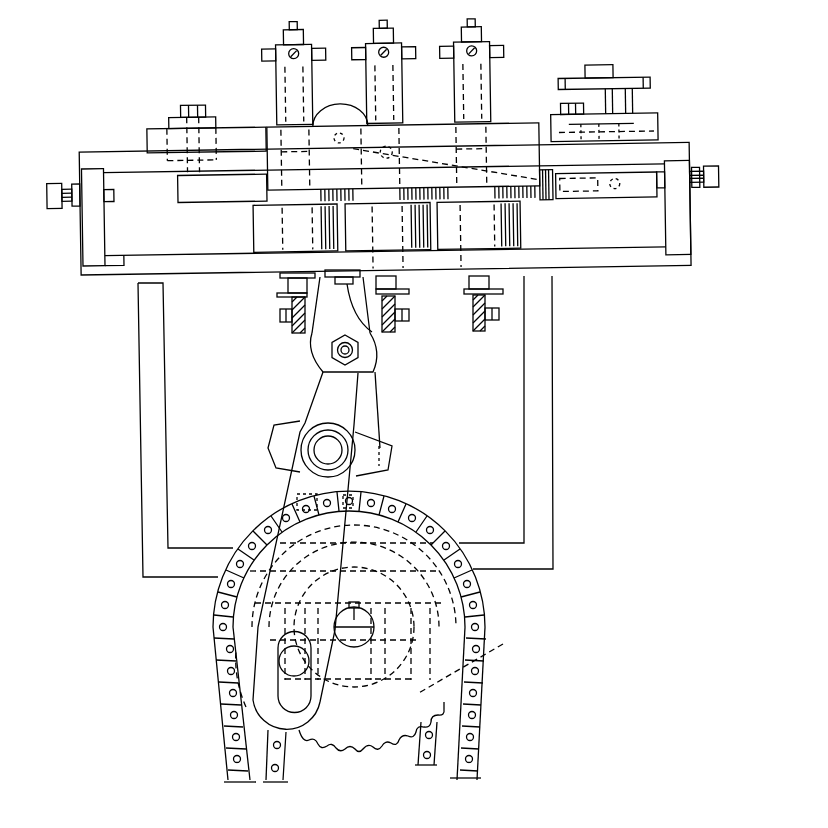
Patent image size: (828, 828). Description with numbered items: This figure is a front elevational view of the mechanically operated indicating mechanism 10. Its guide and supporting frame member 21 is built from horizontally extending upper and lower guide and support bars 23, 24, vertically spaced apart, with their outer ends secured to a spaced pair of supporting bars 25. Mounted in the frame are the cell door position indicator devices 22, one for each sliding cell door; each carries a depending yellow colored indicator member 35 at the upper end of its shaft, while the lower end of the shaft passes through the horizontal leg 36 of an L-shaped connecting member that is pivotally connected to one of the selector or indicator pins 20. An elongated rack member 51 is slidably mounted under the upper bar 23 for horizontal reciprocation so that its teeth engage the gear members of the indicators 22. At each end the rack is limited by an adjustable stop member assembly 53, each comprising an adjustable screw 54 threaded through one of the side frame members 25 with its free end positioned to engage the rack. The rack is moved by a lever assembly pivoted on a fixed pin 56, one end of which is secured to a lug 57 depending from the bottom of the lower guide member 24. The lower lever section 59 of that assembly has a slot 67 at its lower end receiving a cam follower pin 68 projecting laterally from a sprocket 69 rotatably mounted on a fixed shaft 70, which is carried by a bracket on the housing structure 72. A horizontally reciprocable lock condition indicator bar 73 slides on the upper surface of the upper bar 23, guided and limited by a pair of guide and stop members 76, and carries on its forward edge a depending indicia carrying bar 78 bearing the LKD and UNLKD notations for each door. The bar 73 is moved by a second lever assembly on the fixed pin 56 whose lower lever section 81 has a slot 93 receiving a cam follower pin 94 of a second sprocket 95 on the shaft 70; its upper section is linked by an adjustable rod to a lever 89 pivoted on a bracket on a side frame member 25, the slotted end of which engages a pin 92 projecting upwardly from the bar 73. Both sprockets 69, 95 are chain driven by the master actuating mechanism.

The mechanically operated indicating mechanism 10 is at (125, 419).
The selector or indicator pin 20 is at (478, 333).
The guide and supporting frame member 21 is at (130, 25).
The cell door position indicator device 22 is at (512, 43).
The upper guide and support bar 23 is at (147, 164).
The lower guide and support bar 24 is at (638, 259).
The supporting bar 25 is at (95, 228).
The yellow colored indicator member 35 is at (304, 62).
The horizontal leg 36 is at (278, 292).
The rack member 51 is at (649, 201).
The adjustable stop member assembly 53 is at (70, 160).
The adjustable screw 54 is at (717, 180).
The fixed pin 56 is at (369, 371).
The lug 57 is at (386, 340).
The lower lever section 59 is at (394, 460).
The slot 67 is at (276, 705).
The cam follower pin 68 is at (281, 667).
The sprocket 69 is at (238, 637).
The fixed shaft 70 is at (275, 594).
The housing structure 72 is at (552, 431).
The lock condition indicator bar 73 is at (234, 126).
The guide and stop member 76 is at (192, 102).
The indicia carrying bar 78 is at (502, 137).
The lower lever section 81 is at (350, 490).
The lever 89 is at (641, 81).
The pin 92 is at (636, 104).
The slot 93 is at (337, 768).
The cam follower pin 94 is at (437, 513).
The sprocket 95 is at (471, 656).